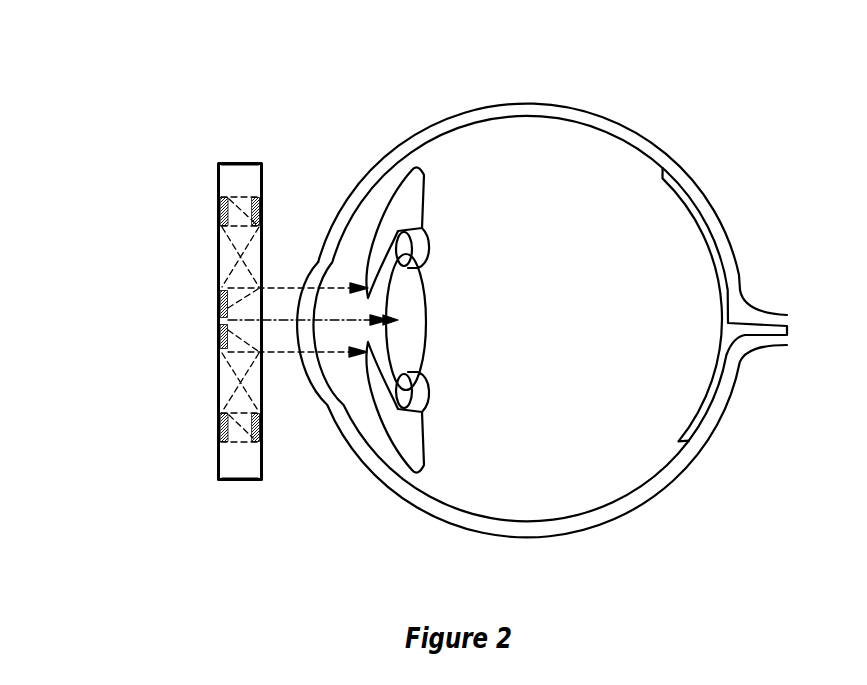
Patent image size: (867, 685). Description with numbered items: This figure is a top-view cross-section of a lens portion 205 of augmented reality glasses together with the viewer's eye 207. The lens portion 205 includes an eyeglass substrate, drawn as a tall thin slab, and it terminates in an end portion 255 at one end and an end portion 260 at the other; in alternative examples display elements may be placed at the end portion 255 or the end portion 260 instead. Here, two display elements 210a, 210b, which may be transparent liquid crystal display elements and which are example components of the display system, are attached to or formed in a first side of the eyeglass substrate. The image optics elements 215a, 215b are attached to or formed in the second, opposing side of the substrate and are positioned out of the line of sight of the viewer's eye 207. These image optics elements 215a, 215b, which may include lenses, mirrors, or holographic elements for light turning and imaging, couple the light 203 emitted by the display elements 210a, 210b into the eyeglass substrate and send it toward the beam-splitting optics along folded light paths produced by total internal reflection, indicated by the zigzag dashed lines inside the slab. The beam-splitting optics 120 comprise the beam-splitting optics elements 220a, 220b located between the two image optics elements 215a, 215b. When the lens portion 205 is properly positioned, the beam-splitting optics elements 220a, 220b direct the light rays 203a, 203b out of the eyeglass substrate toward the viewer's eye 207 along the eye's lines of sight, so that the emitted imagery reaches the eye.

The beam-splitting optics 120 is at (201, 320).
The lens portion 205 is at (220, 163).
The end portion 255 is at (243, 163).
The end portion 260 is at (232, 483).
The display element 210a is at (220, 212).
The display element 210b is at (217, 430).
The image optics element 215a is at (263, 208).
The image optics element 215b is at (262, 434).
The beam-splitting optics element 220a is at (218, 314).
The beam-splitting optics element 220b is at (218, 335).
The light 203 is at (217, 392).
The light ray 203a is at (283, 300).
The light ray 203b is at (298, 327).
The viewer's eye 207 is at (513, 88).